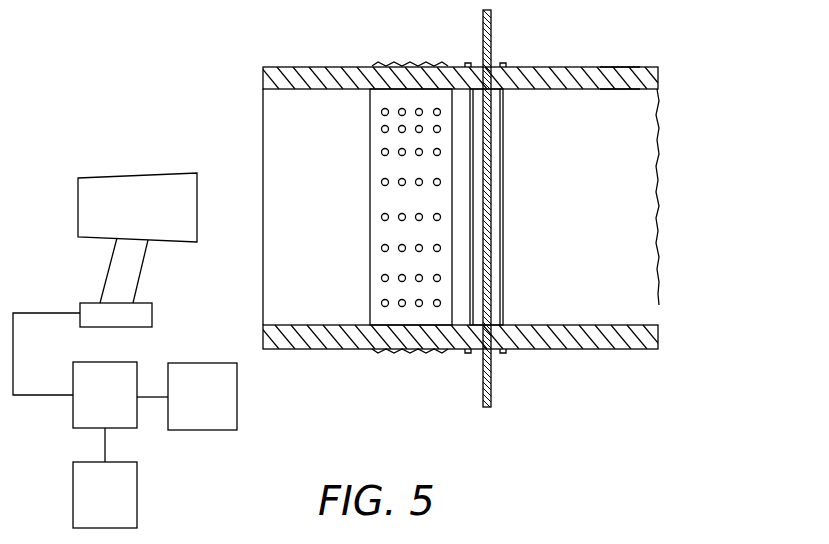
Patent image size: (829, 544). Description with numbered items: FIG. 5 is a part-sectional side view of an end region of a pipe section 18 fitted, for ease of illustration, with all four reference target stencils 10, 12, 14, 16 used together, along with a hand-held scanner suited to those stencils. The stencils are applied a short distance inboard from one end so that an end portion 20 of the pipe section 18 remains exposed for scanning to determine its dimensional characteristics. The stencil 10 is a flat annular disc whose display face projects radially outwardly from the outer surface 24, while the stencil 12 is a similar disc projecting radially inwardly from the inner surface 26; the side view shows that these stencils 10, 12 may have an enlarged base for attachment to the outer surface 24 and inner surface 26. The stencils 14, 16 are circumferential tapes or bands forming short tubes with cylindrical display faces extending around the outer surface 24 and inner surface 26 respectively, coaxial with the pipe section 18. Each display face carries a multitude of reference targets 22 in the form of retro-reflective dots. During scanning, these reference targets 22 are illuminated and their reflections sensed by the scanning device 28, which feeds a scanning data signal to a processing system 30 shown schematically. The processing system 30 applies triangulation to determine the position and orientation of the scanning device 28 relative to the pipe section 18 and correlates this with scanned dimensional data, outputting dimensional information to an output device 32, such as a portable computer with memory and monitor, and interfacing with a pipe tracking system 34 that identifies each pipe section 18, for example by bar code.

The reference target stencil 10 is at (494, 36).
The reference target stencil 12 is at (494, 282).
The reference target stencil 14 is at (427, 349).
The reference target stencil 16 is at (372, 164).
The pipe section 18 is at (678, 310).
The end portion 20 is at (282, 66).
The reference targets 22 is at (492, 107).
The outer surface 24 is at (617, 67).
The inner surface 26 is at (620, 90).
The scanning device 28 is at (137, 250).
The processing system 30 is at (105, 395).
The output device 32 is at (202, 396).
The pipe tracking system 34 is at (105, 495).